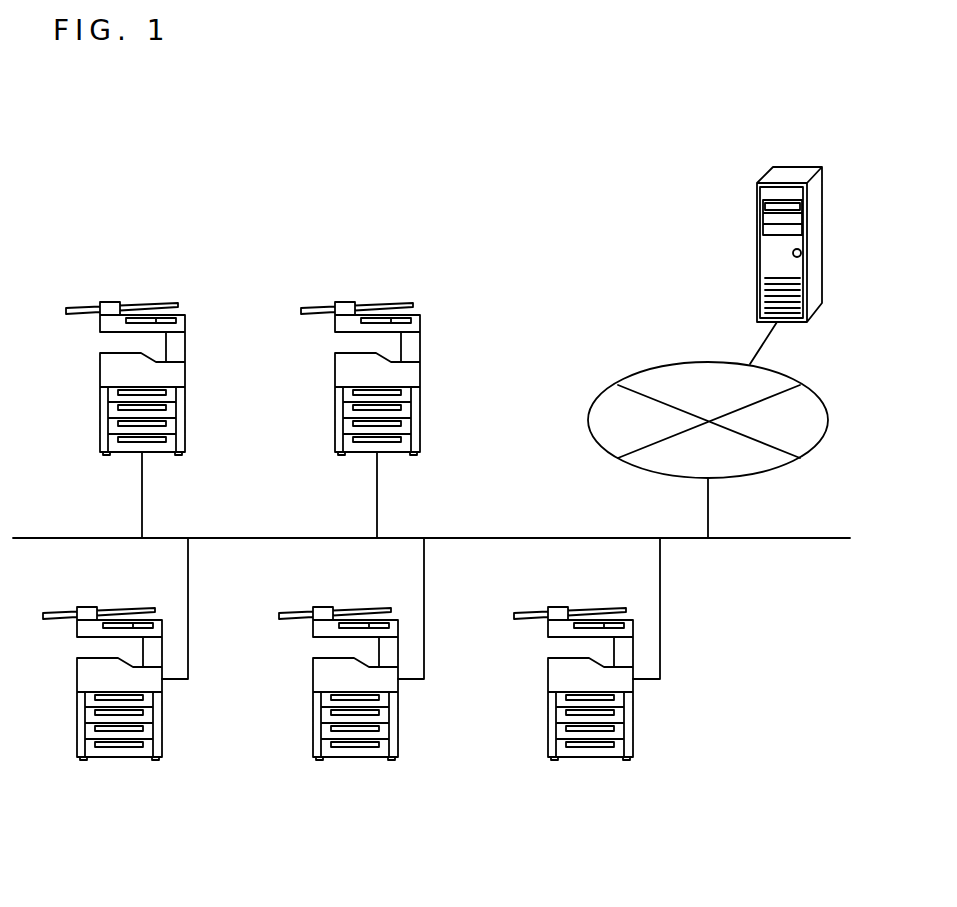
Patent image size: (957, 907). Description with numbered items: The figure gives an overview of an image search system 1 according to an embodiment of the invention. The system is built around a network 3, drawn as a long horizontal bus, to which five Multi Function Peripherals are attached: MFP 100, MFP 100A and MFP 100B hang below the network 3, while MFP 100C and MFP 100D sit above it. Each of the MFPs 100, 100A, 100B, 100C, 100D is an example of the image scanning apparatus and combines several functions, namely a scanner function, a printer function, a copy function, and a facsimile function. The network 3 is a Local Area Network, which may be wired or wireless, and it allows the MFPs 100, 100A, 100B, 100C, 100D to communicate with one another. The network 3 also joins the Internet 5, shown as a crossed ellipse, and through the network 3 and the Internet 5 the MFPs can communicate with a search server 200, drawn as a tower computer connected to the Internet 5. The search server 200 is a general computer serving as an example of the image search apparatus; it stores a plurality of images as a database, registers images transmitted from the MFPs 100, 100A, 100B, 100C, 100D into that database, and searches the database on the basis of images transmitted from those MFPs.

The image search system 1 is at (110, 150).
The network 3 is at (498, 538).
The Internet 5 is at (658, 367).
The Multi Function Peripheral 100 is at (120, 757).
The Multi Function Peripheral 100A is at (356, 757).
The Multi Function Peripheral 100B is at (592, 757).
The Multi Function Peripheral 100C is at (160, 303).
The Multi Function Peripheral 100D is at (395, 303).
The search server 200 is at (798, 165).